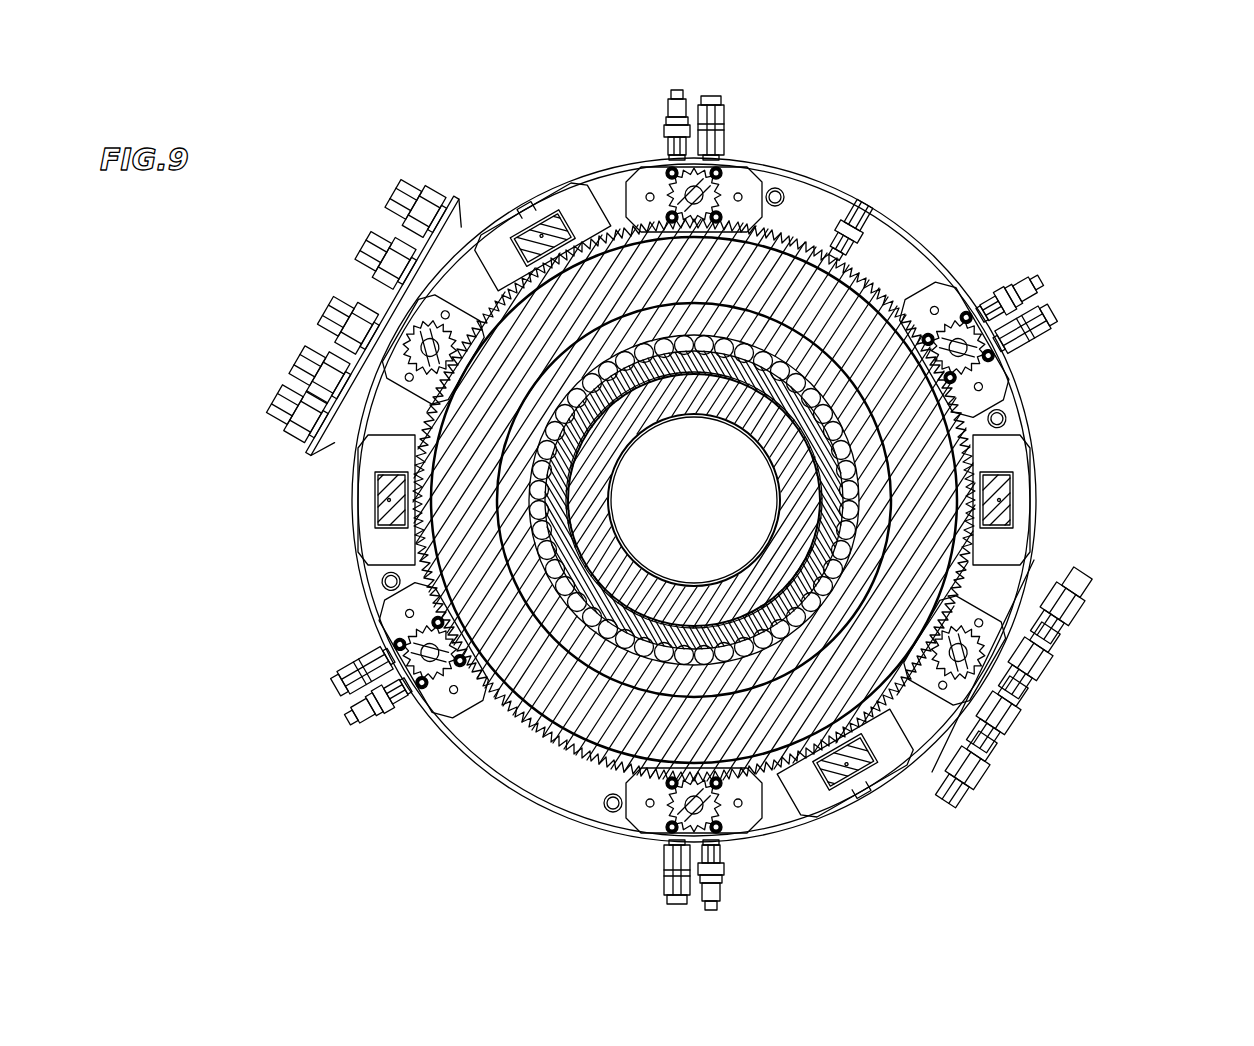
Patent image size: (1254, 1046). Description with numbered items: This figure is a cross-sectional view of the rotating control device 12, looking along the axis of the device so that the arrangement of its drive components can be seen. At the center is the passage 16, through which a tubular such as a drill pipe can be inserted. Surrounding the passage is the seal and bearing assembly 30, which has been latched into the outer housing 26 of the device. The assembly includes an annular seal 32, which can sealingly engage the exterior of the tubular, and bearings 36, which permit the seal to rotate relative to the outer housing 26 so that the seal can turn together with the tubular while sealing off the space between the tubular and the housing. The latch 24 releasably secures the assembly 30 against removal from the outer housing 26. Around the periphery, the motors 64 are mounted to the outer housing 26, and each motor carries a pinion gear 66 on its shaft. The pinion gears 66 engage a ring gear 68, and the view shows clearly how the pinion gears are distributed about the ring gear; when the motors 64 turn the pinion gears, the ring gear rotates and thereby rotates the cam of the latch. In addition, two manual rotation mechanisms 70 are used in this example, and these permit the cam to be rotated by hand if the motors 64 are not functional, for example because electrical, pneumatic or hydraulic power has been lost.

The rotating control device 12 is at (1172, 158).
The passage 16 is at (694, 497).
The latch 24 is at (745, 850).
The outer housing 26 is at (858, 272).
The seal and bearing assembly 30 is at (610, 690).
The annular seal 32 is at (617, 515).
The bearings 36 is at (812, 471).
The motors 64 is at (722, 146).
The pinion gear 66 is at (712, 192).
The ring gear 68 is at (515, 718).
The manual rotation mechanism 70 is at (423, 383).